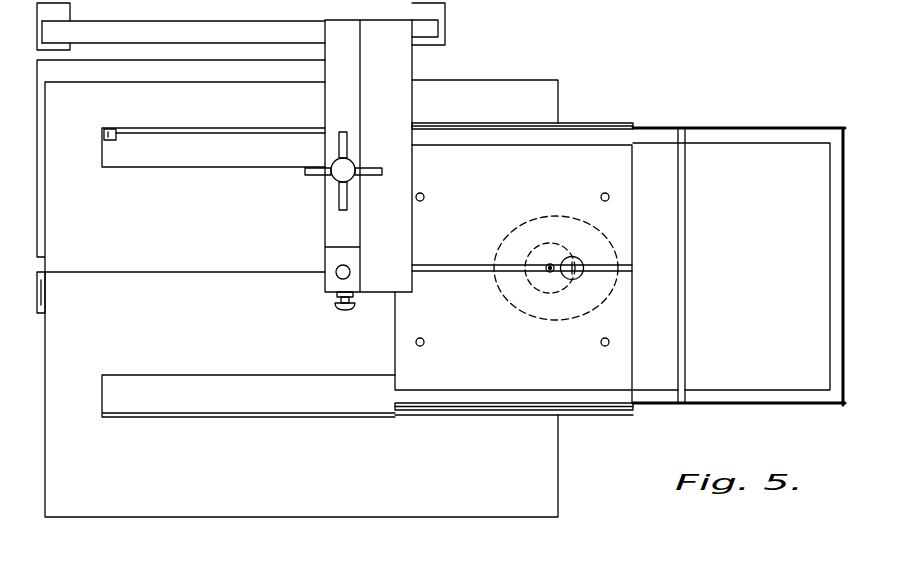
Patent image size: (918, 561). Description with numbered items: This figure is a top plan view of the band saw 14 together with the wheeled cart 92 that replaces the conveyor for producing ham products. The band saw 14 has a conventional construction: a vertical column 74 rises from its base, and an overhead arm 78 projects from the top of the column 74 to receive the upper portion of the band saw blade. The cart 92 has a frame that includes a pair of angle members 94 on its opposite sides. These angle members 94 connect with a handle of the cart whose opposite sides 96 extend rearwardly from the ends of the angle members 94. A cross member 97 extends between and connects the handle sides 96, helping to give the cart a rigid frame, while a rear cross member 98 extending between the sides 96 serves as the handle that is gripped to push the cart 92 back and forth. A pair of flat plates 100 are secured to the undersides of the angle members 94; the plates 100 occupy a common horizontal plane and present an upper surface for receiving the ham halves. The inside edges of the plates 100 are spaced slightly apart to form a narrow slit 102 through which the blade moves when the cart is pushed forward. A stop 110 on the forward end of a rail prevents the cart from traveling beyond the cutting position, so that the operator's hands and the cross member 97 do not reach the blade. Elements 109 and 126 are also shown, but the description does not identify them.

The band saw 14 is at (478, 43).
The vertical column 74 is at (152, 505).
The overhead arm 78 is at (400, 176).
The wheeled cart 92 is at (568, 422).
The angle members 94 is at (576, 128).
The handle sides 96 is at (775, 135).
The cross member 97 is at (688, 311).
The rear cross member 98 is at (834, 232).
The flat plates 100 is at (618, 168).
The slit 102 is at (433, 270).
The guide bars 109 is at (213, 152).
The stop 110 is at (110, 127).
The component (partially shown) 126 is at (700, 560).